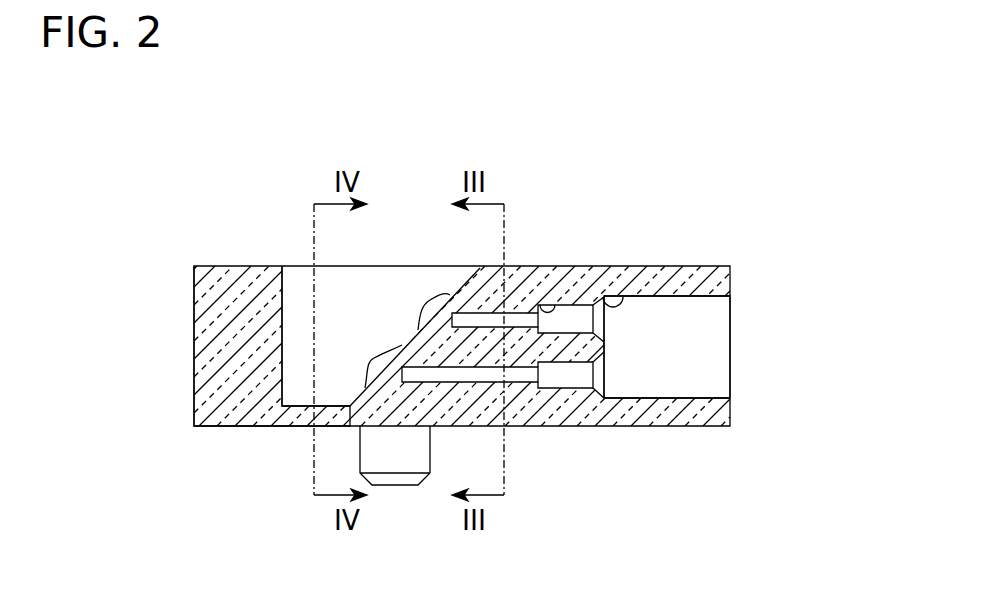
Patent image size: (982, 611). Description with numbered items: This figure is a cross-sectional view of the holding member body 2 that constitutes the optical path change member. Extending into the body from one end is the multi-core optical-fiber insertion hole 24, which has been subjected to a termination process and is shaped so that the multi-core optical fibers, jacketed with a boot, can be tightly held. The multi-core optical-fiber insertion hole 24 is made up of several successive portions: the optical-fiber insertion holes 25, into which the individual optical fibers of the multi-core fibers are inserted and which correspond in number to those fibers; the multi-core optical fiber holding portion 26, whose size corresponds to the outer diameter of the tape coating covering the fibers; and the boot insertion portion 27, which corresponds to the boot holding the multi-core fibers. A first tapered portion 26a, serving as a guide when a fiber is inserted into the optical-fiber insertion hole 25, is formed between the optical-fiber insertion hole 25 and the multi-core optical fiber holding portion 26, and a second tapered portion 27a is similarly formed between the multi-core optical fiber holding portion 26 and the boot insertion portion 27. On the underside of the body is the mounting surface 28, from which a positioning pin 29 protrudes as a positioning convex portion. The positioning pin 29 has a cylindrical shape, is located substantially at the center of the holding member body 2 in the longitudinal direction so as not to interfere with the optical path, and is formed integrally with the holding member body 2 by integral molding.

The holding member body 2 is at (672, 268).
The multi-core optical-fiber insertion hole 24 is at (702, 337).
The optical-fiber insertion hole 25 is at (472, 378).
The multi-core optical fiber holding portion 26 is at (567, 377).
The first tapered portion 26a is at (547, 304).
The boot insertion portion 27 is at (668, 362).
The second tapered portion 27a is at (614, 296).
The mounting surface 28 is at (225, 426).
The positioning pin 29 is at (400, 457).